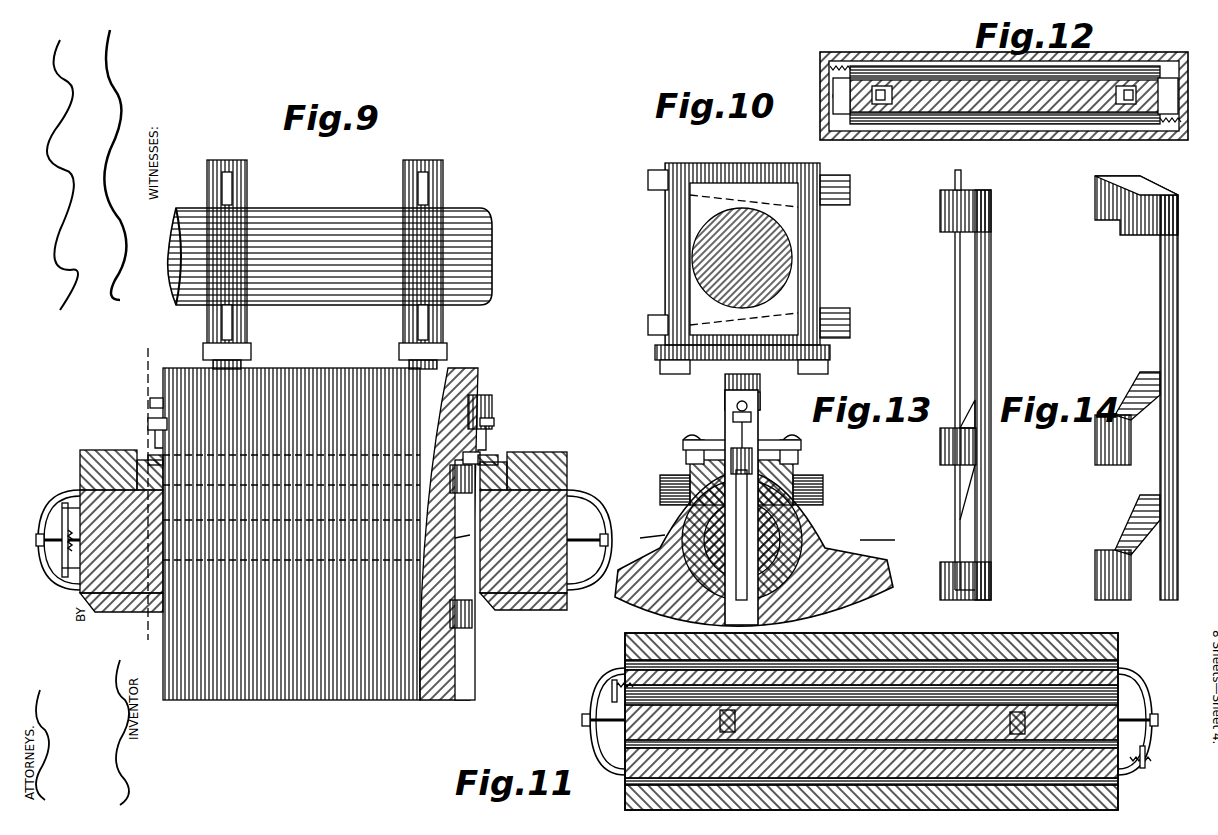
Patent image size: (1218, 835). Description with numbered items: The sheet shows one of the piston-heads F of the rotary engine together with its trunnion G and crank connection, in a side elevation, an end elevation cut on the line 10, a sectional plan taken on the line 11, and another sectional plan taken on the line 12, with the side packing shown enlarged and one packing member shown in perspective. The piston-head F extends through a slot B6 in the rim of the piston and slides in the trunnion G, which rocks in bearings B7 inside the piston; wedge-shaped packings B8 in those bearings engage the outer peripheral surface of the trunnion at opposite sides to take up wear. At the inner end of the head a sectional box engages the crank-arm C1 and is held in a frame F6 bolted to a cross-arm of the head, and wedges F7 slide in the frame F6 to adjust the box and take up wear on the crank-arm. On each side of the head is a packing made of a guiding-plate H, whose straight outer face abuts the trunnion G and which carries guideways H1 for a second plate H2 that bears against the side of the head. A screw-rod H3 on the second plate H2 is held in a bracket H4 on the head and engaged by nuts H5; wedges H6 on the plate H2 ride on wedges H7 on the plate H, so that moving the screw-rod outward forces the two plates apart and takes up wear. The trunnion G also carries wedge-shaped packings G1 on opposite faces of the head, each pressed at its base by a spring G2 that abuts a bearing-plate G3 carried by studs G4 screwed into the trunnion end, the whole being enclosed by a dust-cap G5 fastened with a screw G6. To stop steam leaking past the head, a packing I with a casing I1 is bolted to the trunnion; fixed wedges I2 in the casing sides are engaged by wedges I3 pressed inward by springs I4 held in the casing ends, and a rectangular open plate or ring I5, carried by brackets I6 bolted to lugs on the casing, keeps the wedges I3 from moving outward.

In FIG. 9, the piston-head F is at (315, 385).
In FIG. 10, the piston-head F is at (725, 396).
In FIG. 12, the piston-head F is at (1035, 98).
In FIG. 13, the piston-head F is at (725, 398).
In FIG. 11, the piston-head F is at (930, 690).
In FIG. 9, the frame F6 is at (207, 205).
In FIG. 10, the frame F6 is at (798, 228).
In FIG. 9, the wedges F7 is at (232, 190).
In FIG. 10, the wedges F7 is at (850, 190).
In FIG. 9, the crank-arm C1 is at (338, 225).
In FIG. 10, the crank-arm C1 is at (692, 258).
In FIG. 9, the guiding-plate H is at (472, 642).
In FIG. 12, the guiding-plate H is at (838, 108).
In FIG. 14, the guiding-plate H is at (985, 350).
In FIG. 13, the guiding-plate H is at (720, 600).
In FIG. 11, the guiding-plate H is at (668, 633).
In FIG. 9, the guideways H1 is at (452, 480).
In FIG. 14, the guideways H1 is at (940, 228).
In FIG. 12, the second plate H2 is at (878, 104).
In FIG. 14, the second plate H2 is at (955, 330).
In FIG. 13, the second plate H2 is at (741, 507).
In FIG. 9, the screw-rod H3 is at (488, 440).
In FIG. 13, the screw-rod H3 is at (748, 440).
In FIG. 9, the bracket H4 is at (494, 422).
In FIG. 13, the bracket H4 is at (758, 405).
In FIG. 9, the nuts H5 is at (478, 412).
In FIG. 13, the nuts H5 is at (733, 410).
In FIG. 9, the wedges H6 is at (470, 656).
In FIG. 14, the wedges H6 is at (985, 380).
In FIG. 9, the wedges H7 is at (455, 700).
In FIG. 14, the wedges H7 is at (975, 420).
In FIG. 9, the packing I is at (480, 454).
In FIG. 12, the packing I is at (994, 87).
In FIG. 13, the packing I is at (823, 488).
In FIG. 9, the casing I1 is at (567, 462).
In FIG. 12, the casing I1 is at (858, 60).
In FIG. 12, the wedges I2 is at (940, 60).
In FIG. 13, the wedges I2 is at (760, 478).
In FIG. 12, the wedges I3 is at (880, 70).
In FIG. 13, the wedges I3 is at (662, 485).
In FIG. 12, the springs I4 is at (830, 70).
In FIG. 9, the rectangular open plate or ring I5 is at (500, 462).
In FIG. 13, the rectangular open plate or ring I5 is at (686, 446).
In FIG. 13, the brackets I6 is at (690, 432).
In FIG. 13, the slots B6 is at (790, 612).
In FIG. 11, the slots B6 is at (840, 618).
In FIG. 9, the bearings B7 is at (545, 452).
In FIG. 13, the bearings B7 is at (825, 510).
In FIG. 11, the bearings B7 is at (1035, 680).
In FIG. 13, the wedge-shaped packings B8 is at (682, 520).
In FIG. 11, the wedge-shaped packings B8 is at (975, 665).
In FIG. 9, the trunnion G is at (600, 505).
In FIG. 13, the trunnion G is at (835, 530).
In FIG. 11, the trunnion G is at (880, 710).
In FIG. 9, the wedge-shaped packings G1 is at (540, 600).
In FIG. 13, the wedge-shaped packings G1 is at (818, 560).
In FIG. 11, the wedge-shaped packings G1 is at (730, 710).
In FIG. 9, the spring G2 is at (62, 545).
In FIG. 11, the spring G2 is at (600, 690).
In FIG. 9, the bearing-plate G3 is at (62, 572).
In FIG. 11, the bearing-plate G3 is at (614, 680).
In FIG. 9, the studs G4 is at (70, 588).
In FIG. 9, the dust-cap G5 is at (62, 510).
In FIG. 13, the dust-cap G5 is at (635, 505).
In FIG. 11, the dust-cap G5 is at (596, 720).
In FIG. 9, the screw G6 is at (36, 540).
In FIG. 11, the screw G6 is at (612, 745).
In FIG. 9, the section line 10 10 is at (122, 378).
In FIG. 9, the section line 11 11 is at (145, 655).
In FIG. 13, the section line 11 11 is at (756, 533).
In FIG. 9, the section line 12 12 is at (567, 478).
In FIG. 13, the section line 12 12 is at (615, 473).